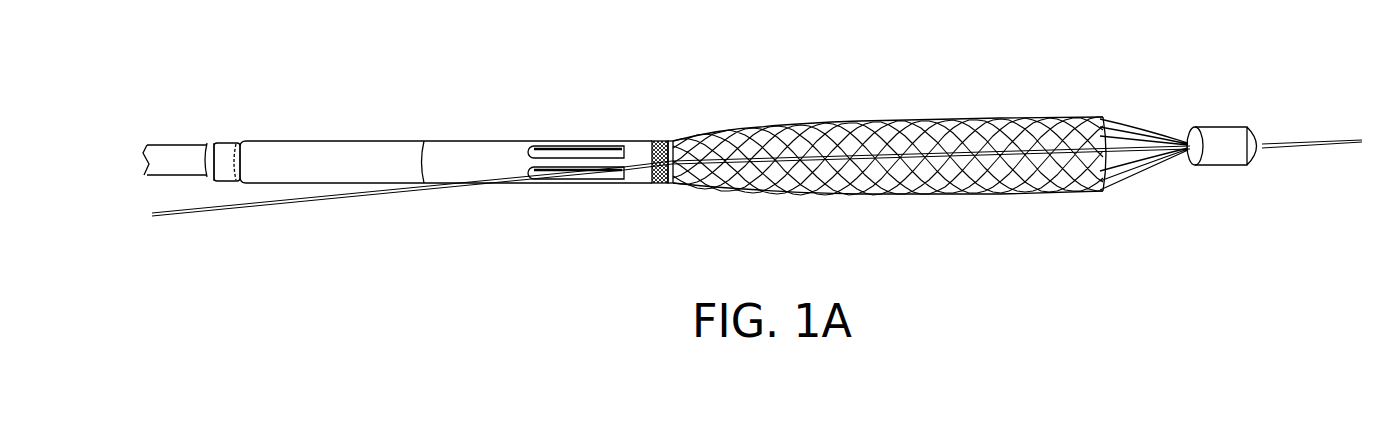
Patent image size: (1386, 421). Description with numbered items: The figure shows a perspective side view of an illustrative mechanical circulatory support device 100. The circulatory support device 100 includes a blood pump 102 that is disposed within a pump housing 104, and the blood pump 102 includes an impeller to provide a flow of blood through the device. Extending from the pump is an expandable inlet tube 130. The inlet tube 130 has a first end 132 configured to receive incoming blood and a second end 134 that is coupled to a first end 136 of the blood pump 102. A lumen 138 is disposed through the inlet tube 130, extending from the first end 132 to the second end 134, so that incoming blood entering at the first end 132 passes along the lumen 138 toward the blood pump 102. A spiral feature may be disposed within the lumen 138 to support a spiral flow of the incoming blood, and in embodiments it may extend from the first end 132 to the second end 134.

The mechanical circulatory support device 100 is at (201, 51).
The blood pump 102 is at (633, 133).
The pump housing 104 is at (467, 147).
The expandable inlet tube 130 is at (760, 116).
The first end 132 is at (1232, 135).
The second end 134 is at (760, 210).
The first end 136 is at (699, 140).
The lumen 138 is at (1118, 130).